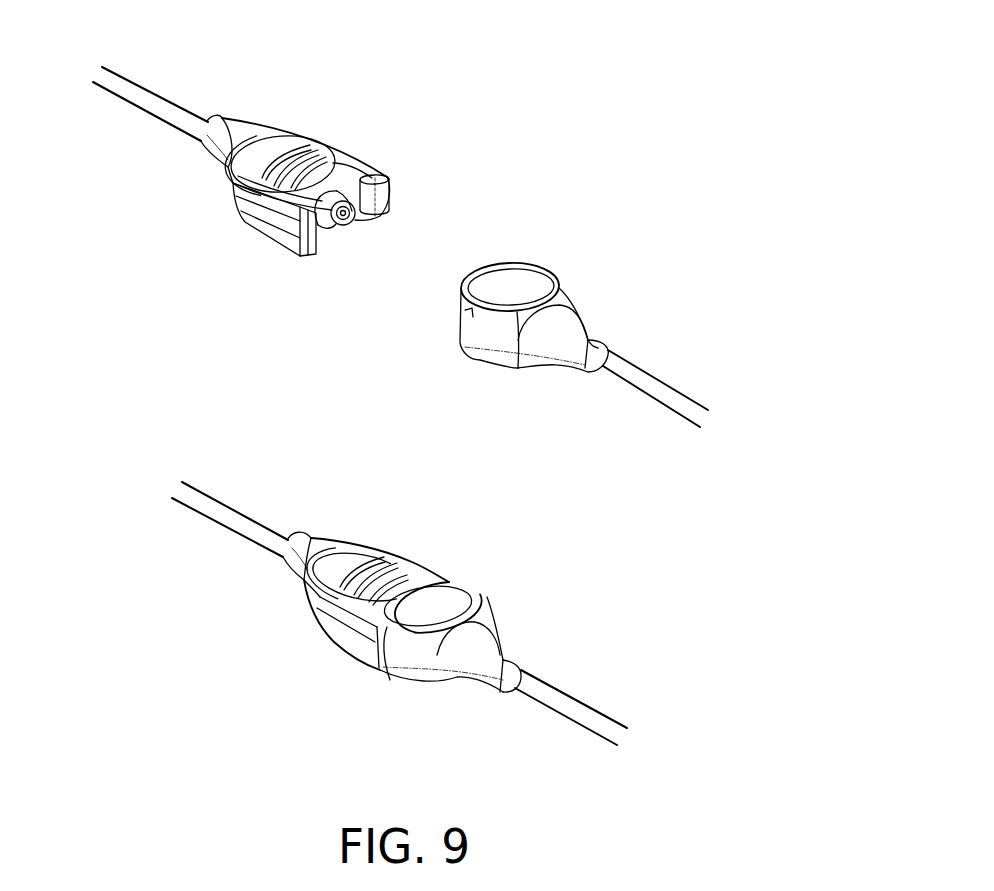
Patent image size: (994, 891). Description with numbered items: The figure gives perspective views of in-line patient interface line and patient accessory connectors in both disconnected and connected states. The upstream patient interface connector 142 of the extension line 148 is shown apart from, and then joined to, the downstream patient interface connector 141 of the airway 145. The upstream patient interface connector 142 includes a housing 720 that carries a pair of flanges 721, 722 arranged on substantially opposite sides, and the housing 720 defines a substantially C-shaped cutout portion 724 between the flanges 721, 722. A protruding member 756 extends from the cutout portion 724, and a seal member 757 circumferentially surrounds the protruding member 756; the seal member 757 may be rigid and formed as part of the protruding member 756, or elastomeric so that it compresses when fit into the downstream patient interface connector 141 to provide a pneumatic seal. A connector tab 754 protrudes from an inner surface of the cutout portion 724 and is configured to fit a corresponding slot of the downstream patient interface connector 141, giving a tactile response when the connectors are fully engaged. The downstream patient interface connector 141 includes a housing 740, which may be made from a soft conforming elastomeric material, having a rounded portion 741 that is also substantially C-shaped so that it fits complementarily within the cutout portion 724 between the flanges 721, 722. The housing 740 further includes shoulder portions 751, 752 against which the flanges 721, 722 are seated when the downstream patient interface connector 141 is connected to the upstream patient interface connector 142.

The downstream patient interface connector 141 is at (650, 222).
The upstream patient interface connector 142 is at (259, 74).
The airway 145 is at (661, 395).
The extension line 148 is at (132, 97).
The housing 720 is at (228, 168).
The flange 721 is at (376, 172).
The flange 722 is at (250, 224).
The cutout portion 724 is at (347, 176).
The housing 740 is at (502, 340).
The rounded portion 741 is at (524, 274).
The shoulder portion 751 is at (478, 592).
The shoulder portion 752 is at (482, 320).
The connector tab 754 is at (390, 190).
The protruding member 756 is at (327, 180).
The seal member 757 is at (322, 228).